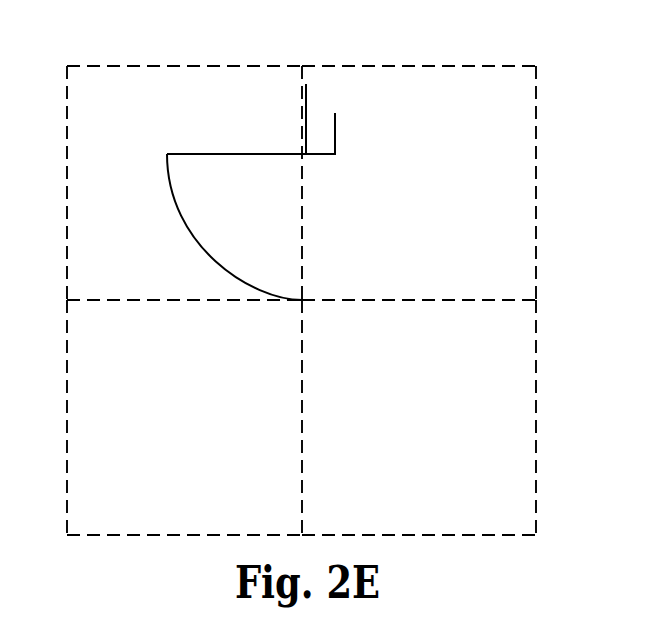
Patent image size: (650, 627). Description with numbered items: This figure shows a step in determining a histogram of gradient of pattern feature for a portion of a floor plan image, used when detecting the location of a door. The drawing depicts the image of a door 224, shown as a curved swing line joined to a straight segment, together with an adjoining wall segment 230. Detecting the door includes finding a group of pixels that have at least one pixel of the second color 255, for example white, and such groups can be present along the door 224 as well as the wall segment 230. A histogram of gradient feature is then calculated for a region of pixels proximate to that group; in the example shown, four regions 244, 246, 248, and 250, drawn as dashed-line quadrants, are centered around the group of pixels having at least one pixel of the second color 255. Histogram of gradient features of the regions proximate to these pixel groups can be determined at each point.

The door 224 is at (237, 154).
The wall segment 230 is at (335, 136).
The region 244 is at (67, 415).
The region 246 is at (67, 180).
The region 248 is at (536, 180).
The region 250 is at (536, 400).
The second color 255 is at (303, 298).